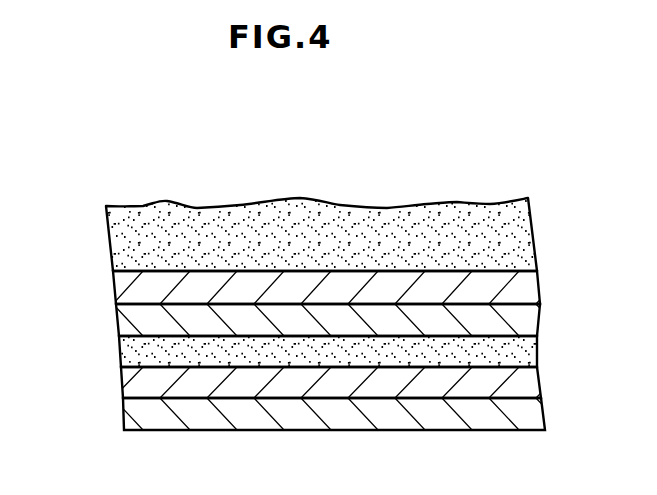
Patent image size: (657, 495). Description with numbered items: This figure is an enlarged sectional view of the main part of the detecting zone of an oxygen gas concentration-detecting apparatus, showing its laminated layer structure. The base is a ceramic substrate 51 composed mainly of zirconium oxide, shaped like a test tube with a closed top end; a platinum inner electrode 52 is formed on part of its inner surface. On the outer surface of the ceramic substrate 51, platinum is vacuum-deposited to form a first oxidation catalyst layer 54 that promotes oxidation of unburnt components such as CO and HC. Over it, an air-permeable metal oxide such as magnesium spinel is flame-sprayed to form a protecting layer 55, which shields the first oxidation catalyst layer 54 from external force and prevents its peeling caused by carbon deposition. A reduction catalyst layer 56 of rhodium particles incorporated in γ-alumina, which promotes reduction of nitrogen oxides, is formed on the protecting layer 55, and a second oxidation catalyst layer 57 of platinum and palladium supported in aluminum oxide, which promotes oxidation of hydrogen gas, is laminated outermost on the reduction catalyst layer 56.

The ceramic substrate 51 is at (120, 236).
The inner electrode 52 is at (130, 289).
The first oxidation catalyst layer 54 is at (130, 322).
The protecting layer 55 is at (130, 352).
The reduction catalyst layer 56 is at (530, 383).
The second oxidation catalyst layer 57 is at (535, 417).